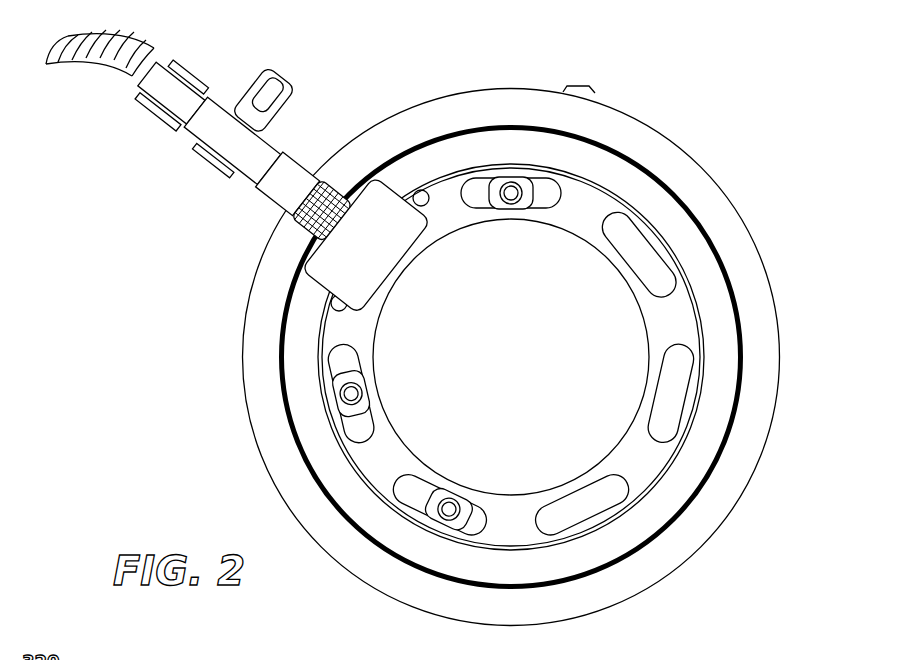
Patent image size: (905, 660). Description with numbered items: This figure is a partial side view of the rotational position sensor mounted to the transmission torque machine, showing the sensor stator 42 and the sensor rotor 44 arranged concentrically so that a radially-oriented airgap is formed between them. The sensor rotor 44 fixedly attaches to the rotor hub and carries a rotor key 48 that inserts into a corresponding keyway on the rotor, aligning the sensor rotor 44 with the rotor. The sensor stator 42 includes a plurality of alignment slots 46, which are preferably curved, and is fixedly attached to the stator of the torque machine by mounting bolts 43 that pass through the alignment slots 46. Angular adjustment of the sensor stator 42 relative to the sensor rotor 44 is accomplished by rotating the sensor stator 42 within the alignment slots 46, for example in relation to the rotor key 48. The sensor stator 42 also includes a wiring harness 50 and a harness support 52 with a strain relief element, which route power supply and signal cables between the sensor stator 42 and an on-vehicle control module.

The sensor stator 42 is at (670, 327).
The mounting bolts 43 is at (544, 194).
The sensor rotor 44 is at (443, 87).
The alignment slots 46 is at (340, 356).
The rotor key 48 is at (592, 91).
The wiring harness 50 is at (120, 78).
The harness support 52 is at (308, 281).